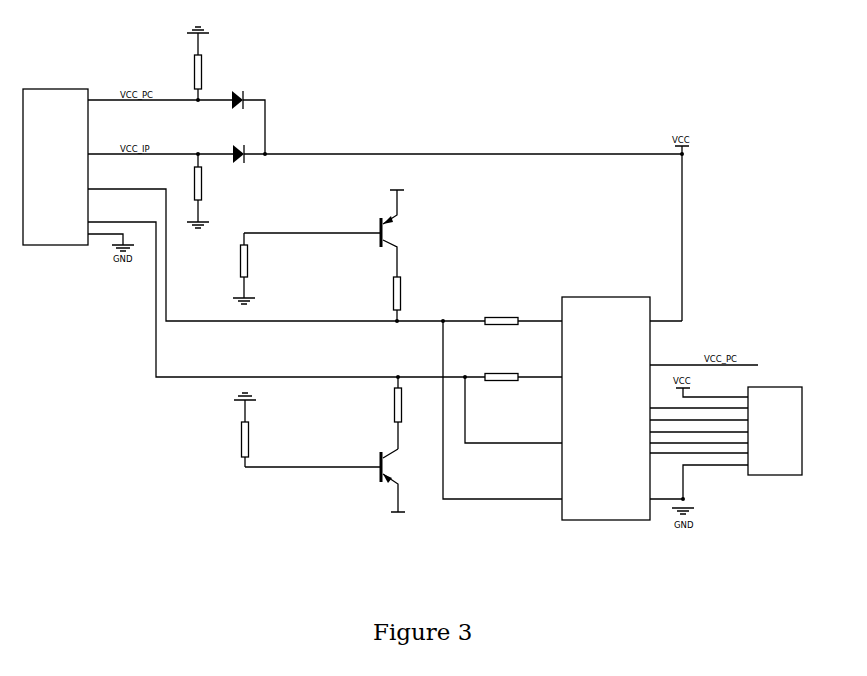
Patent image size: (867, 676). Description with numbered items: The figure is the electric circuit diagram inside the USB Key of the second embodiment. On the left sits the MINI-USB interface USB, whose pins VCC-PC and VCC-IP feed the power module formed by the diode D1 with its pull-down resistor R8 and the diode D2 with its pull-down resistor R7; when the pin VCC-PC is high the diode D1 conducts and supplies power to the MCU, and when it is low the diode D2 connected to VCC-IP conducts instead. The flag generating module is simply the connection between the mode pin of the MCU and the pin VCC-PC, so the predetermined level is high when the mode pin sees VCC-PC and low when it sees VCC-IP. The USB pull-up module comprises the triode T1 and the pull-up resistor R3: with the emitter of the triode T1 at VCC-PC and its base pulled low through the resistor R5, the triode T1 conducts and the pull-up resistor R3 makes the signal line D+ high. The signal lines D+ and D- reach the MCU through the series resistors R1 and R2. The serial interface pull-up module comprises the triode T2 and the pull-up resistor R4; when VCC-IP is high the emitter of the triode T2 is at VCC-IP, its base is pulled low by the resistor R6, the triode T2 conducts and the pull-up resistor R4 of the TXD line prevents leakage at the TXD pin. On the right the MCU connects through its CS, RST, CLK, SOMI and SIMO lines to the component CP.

The MINI-USB interface USB is at (61, 169).
The resistor R1 is at (501, 322).
The resistor R2 is at (501, 378).
The pull-up resistor R3 is at (408, 299).
The pull-up resistor R4 is at (408, 413).
The resistor R5 is at (306, 276).
The resistor R6 is at (307, 424).
The pull-down resistor R7 is at (201, 198).
The pull-down resistor R8 is at (201, 57).
The diode D1 is at (237, 100).
The diode D2 is at (238, 154).
The triode T1 is at (404, 228).
The triode T2 is at (405, 483).
The element MCU is at (606, 410).
The element CP is at (768, 425).